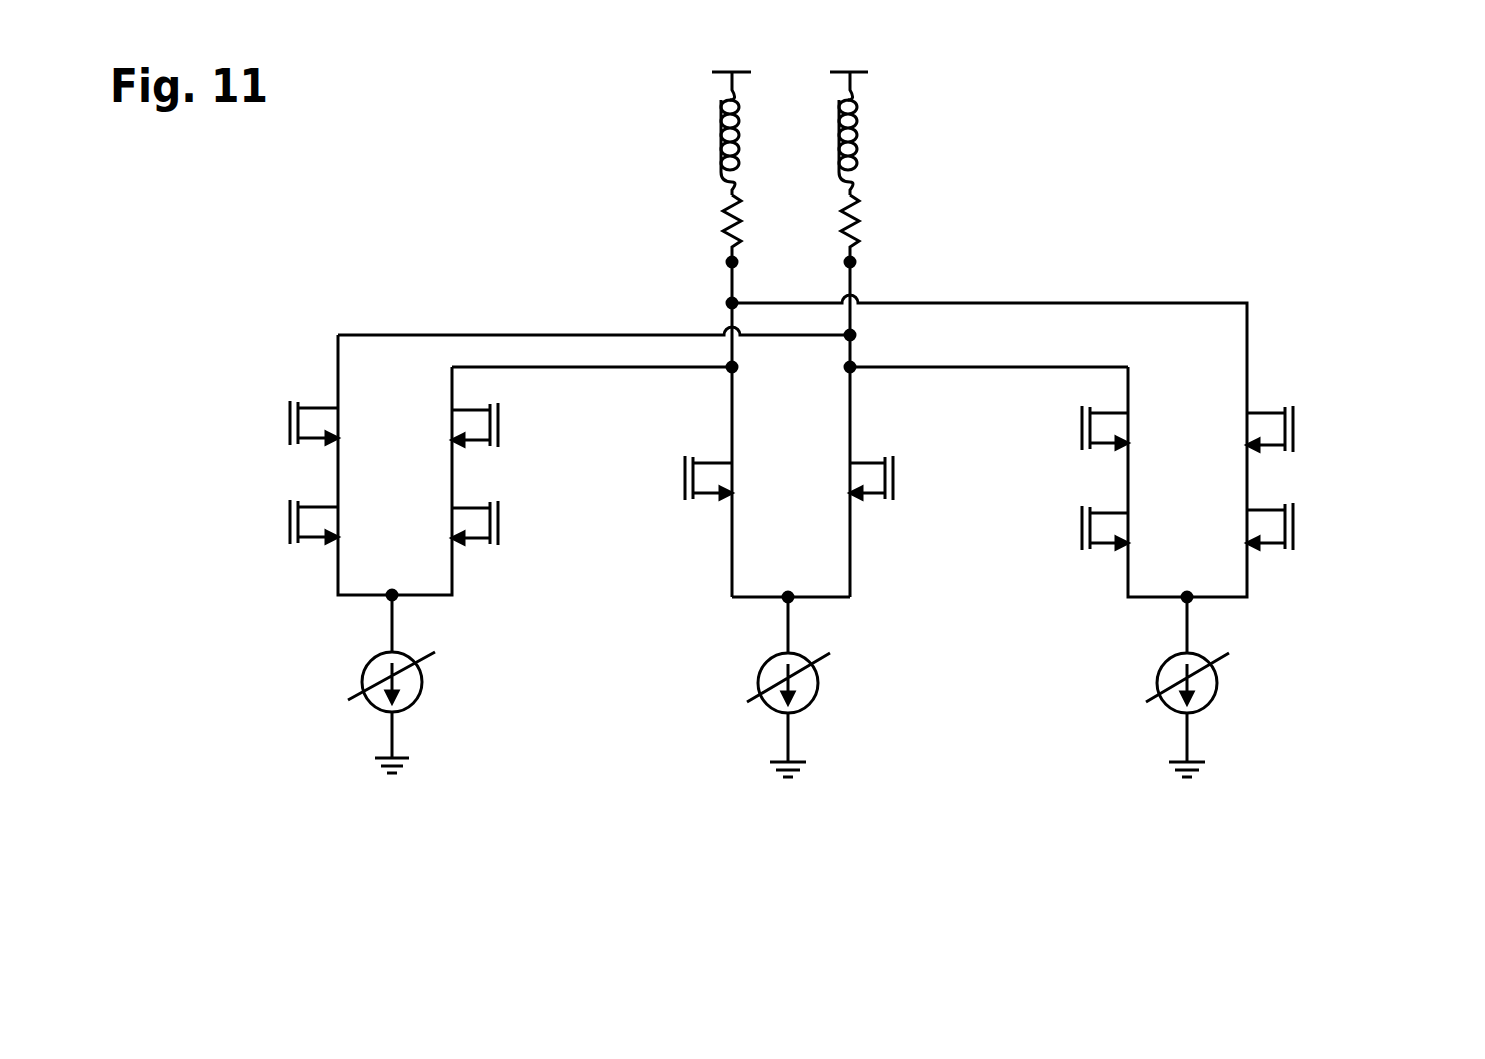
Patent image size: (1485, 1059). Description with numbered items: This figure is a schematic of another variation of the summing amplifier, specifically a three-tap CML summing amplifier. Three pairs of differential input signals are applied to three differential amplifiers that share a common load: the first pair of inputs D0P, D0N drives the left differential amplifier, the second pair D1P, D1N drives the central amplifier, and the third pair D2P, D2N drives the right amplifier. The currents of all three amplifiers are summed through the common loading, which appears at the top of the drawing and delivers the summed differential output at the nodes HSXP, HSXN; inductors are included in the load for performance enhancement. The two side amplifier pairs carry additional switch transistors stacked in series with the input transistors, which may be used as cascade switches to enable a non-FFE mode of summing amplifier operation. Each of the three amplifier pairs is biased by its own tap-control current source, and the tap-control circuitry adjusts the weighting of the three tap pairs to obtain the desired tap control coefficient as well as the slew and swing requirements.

The positive high-speed output node HSXP is at (732, 262).
The negative high-speed output node HSXN is at (857, 262).
The differential input signal D0P is at (290, 520).
The differential input signal D0N is at (498, 522).
The differential input signal D1P is at (685, 478).
The differential input signal D1N is at (893, 480).
The differential input signal D2P is at (1082, 527).
The differential input signal D2N is at (1293, 527).